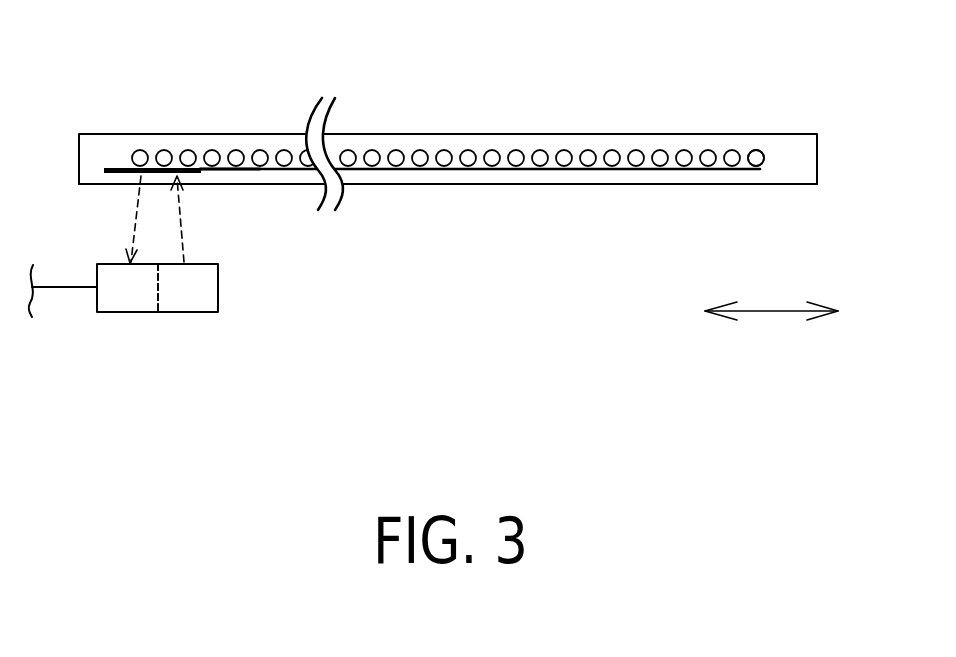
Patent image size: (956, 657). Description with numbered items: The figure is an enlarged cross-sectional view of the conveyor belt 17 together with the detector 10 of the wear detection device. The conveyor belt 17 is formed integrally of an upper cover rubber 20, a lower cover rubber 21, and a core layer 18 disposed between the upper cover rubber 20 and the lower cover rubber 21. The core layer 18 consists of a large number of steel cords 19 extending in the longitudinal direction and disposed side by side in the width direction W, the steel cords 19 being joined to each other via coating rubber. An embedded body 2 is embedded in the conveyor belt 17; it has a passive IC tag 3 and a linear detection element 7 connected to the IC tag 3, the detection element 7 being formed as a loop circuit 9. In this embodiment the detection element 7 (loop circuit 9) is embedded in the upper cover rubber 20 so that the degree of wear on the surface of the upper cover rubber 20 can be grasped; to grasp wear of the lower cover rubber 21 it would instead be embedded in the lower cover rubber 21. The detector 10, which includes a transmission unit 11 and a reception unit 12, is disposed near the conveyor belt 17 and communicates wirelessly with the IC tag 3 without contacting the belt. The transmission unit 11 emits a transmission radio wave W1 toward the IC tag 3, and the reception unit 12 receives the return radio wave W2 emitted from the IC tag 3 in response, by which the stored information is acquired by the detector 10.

The embedded body 2 is at (277, 80).
The IC tag 3 is at (155, 167).
The detection element 7 is at (224, 166).
The loop circuit 9 is at (224, 166).
The detector 10 is at (123, 356).
The transmission unit 11 is at (180, 325).
The reception unit 12 is at (127, 314).
The conveyor belt 17 is at (712, 131).
The core layer 18 is at (770, 158).
The steel cord 19 is at (371, 150).
The upper cover rubber 20 is at (525, 185).
The lower cover rubber 21 is at (525, 143).
The width direction W is at (771, 299).
The transmission radio wave W1 is at (197, 219).
The return radio wave W2 is at (112, 219).